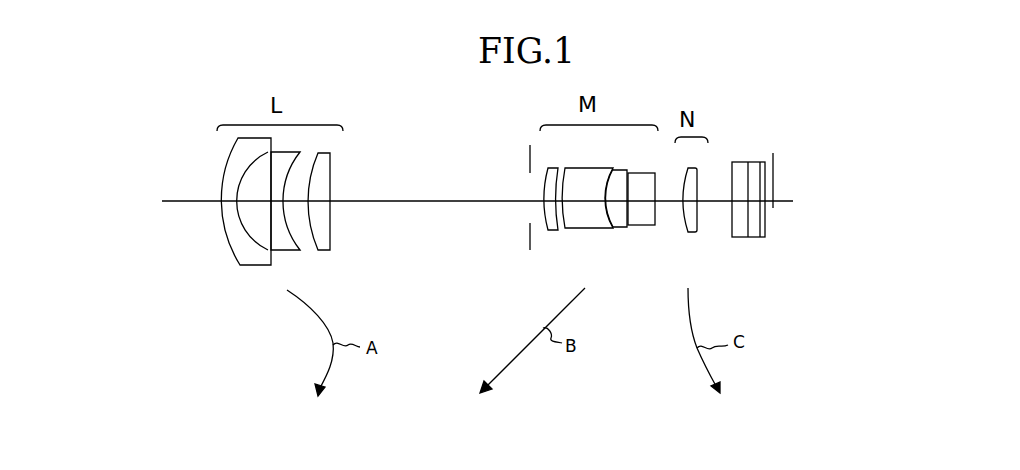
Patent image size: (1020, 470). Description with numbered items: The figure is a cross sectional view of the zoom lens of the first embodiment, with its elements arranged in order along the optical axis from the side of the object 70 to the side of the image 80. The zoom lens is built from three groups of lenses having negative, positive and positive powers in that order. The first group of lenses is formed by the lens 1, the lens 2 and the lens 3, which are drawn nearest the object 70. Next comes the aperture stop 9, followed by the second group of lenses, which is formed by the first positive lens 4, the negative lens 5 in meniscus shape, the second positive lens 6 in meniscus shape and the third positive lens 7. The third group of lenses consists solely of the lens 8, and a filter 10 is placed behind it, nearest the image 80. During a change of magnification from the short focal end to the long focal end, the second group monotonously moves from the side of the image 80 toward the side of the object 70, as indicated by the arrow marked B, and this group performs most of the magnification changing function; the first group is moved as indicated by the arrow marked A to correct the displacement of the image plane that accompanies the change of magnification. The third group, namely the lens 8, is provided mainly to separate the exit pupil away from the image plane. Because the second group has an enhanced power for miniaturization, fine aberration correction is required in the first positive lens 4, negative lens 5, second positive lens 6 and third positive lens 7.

The lens 1 is at (238, 255).
The lens 2 is at (282, 253).
The lens 3 is at (324, 252).
The first positive lens 4 is at (553, 230).
The negative lens 5 is at (592, 229).
The second positive lens 6 is at (620, 228).
The third positive lens 7 is at (642, 226).
The lens 8 is at (690, 233).
The aperture stop 9 is at (530, 250).
The filter 10 is at (777, 238).
The object 70 is at (97, 200).
The image 80 is at (840, 181).